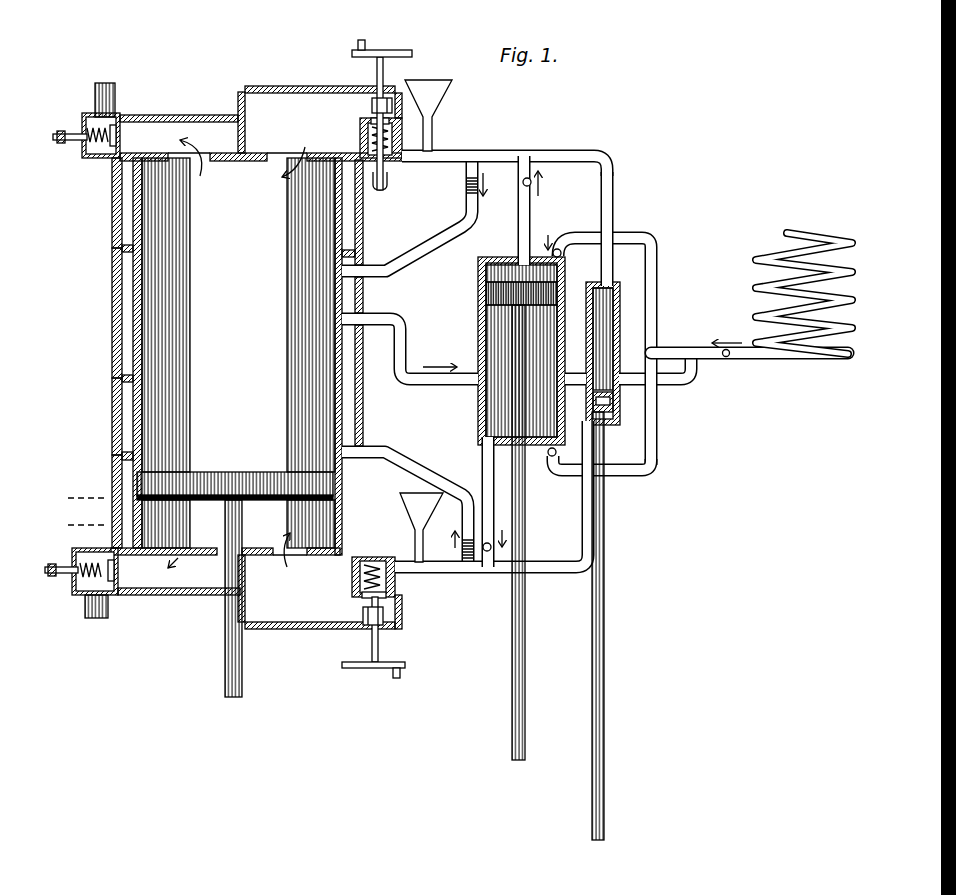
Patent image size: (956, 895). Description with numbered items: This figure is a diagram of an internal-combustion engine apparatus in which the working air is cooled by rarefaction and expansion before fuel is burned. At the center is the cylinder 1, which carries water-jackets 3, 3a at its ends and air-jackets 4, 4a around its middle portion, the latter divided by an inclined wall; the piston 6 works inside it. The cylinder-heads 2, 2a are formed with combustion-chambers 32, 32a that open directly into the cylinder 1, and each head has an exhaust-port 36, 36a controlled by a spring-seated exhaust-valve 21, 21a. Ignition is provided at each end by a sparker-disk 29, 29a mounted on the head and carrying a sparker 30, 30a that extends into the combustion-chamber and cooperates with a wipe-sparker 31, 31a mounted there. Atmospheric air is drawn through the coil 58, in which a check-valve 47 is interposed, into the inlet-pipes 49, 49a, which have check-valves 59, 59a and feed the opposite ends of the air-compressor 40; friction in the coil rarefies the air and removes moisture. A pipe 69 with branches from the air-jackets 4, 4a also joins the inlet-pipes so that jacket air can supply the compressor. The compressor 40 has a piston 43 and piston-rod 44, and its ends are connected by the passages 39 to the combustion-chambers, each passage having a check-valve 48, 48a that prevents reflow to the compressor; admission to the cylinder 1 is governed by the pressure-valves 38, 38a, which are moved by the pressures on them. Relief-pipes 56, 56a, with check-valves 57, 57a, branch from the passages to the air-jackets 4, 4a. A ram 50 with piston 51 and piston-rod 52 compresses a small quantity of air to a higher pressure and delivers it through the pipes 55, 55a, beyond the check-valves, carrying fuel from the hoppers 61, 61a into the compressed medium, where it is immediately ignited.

The cylinder 1 is at (256, 353).
The cylinder-head 2 is at (179, 107).
The cylinder-head 2a is at (179, 606).
The water-jacket 3 is at (125, 208).
The water-jacket 3a is at (123, 478).
The air-jacket 4 is at (122, 320).
The air-jacket 4a is at (118, 415).
The piston 6 is at (235, 584).
The exhaust-valve 21 is at (103, 135).
The exhaust-valve 21a is at (111, 571).
The sparker-disk 29 is at (412, 53).
The sparker-disk 29a is at (373, 679).
The sparker 30 is at (372, 105).
The sparker 30a is at (363, 618).
The wipe-sparker 31 is at (395, 123).
The wipe-sparker 31a is at (397, 620).
The combustion-chamber 32 is at (320, 119).
The combustion-chamber 32a is at (320, 592).
The exhaust-port 36 is at (113, 92).
The exhaust-port 36a is at (95, 620).
The pressure-valve 38 is at (360, 122).
The pressure-valve 38a is at (355, 598).
The inlet-passage 39 is at (480, 145).
The air-compressor 40 is at (490, 337).
The piston 43 is at (495, 295).
The piston-rod 44 is at (534, 532).
The check-valve 47 is at (728, 358).
The check-valve 48 is at (515, 210).
The check-valve 48a is at (488, 556).
The inlet-pipe 49 is at (656, 255).
The inlet-pipe 49a is at (656, 465).
The ram 50 is at (615, 302).
The piston 51 is at (618, 410).
The piston-rod 52 is at (611, 626).
The pipe 55 is at (612, 212).
The pipe 55a is at (592, 537).
The relief-pipe 56 is at (407, 215).
The relief-pipe 56a is at (405, 505).
The check-valve 57 is at (467, 181).
The check-valve 57a is at (460, 562).
The coil 58 is at (815, 238).
The check-valve 59 is at (561, 253).
The check-valve 59a is at (551, 458).
The hopper 61 is at (447, 90).
The hopper 61a is at (410, 501).
The pipe 69 is at (468, 382).